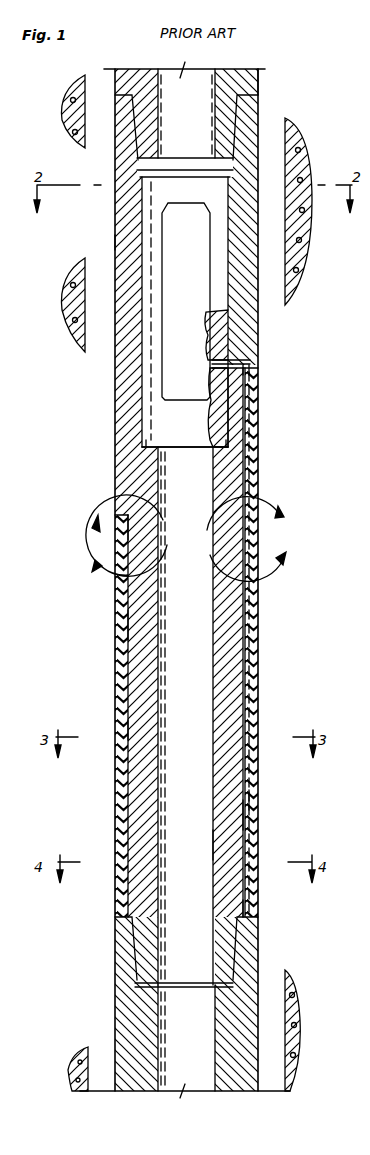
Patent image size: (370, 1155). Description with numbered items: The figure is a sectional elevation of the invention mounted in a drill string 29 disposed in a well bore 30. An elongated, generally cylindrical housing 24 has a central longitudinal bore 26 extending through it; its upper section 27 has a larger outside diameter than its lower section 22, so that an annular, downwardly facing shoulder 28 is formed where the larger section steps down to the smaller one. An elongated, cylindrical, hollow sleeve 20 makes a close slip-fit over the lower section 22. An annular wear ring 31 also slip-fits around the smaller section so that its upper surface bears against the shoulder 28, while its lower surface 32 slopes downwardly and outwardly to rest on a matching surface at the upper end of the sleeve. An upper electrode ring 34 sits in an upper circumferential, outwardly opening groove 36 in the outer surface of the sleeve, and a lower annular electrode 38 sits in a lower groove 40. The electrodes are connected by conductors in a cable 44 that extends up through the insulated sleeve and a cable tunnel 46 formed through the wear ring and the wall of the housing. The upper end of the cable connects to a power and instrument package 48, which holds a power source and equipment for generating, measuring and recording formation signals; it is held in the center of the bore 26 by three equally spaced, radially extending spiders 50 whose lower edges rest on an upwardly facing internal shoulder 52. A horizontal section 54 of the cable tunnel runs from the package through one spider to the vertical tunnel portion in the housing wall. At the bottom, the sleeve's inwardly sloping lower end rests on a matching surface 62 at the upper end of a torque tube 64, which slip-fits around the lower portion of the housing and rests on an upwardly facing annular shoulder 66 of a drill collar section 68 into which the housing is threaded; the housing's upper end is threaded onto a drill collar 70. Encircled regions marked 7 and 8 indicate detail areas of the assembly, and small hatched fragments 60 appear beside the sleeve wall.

The sleeve 20 is at (258, 700).
The lower section 22 is at (248, 816).
The housing 24 is at (110, 212).
The central longitudinal bore 26 is at (216, 840).
The upper section 27 is at (115, 243).
The shoulder 28 is at (128, 500).
The drill string 29 is at (104, 934).
The well bore 30 is at (88, 1065).
The wear ring 31 is at (118, 520).
The lower surface 32 is at (120, 550).
The upper electrode ring 34 is at (118, 620).
The upper groove 36 is at (120, 628).
The lower annular electrode 38 is at (120, 748).
The lower groove 40 is at (120, 730).
The cable 44 is at (245, 462).
The cable tunnel 46 is at (245, 440).
The power and instrument package 48 is at (184, 283).
The spiders 50 is at (180, 447).
The internal shoulder 52 is at (160, 435).
The horizontal section 54 is at (250, 352).
The sleeve groove 60 is at (250, 800).
The matching surface 62 is at (118, 790).
The torque tube 64 is at (260, 836).
The annular shoulder 66 is at (252, 908).
The drill collar section 68 is at (260, 950).
The drill collar 70 is at (258, 78).
The detail circle 7 is at (121, 535).
The detail circle 8 is at (246, 539).